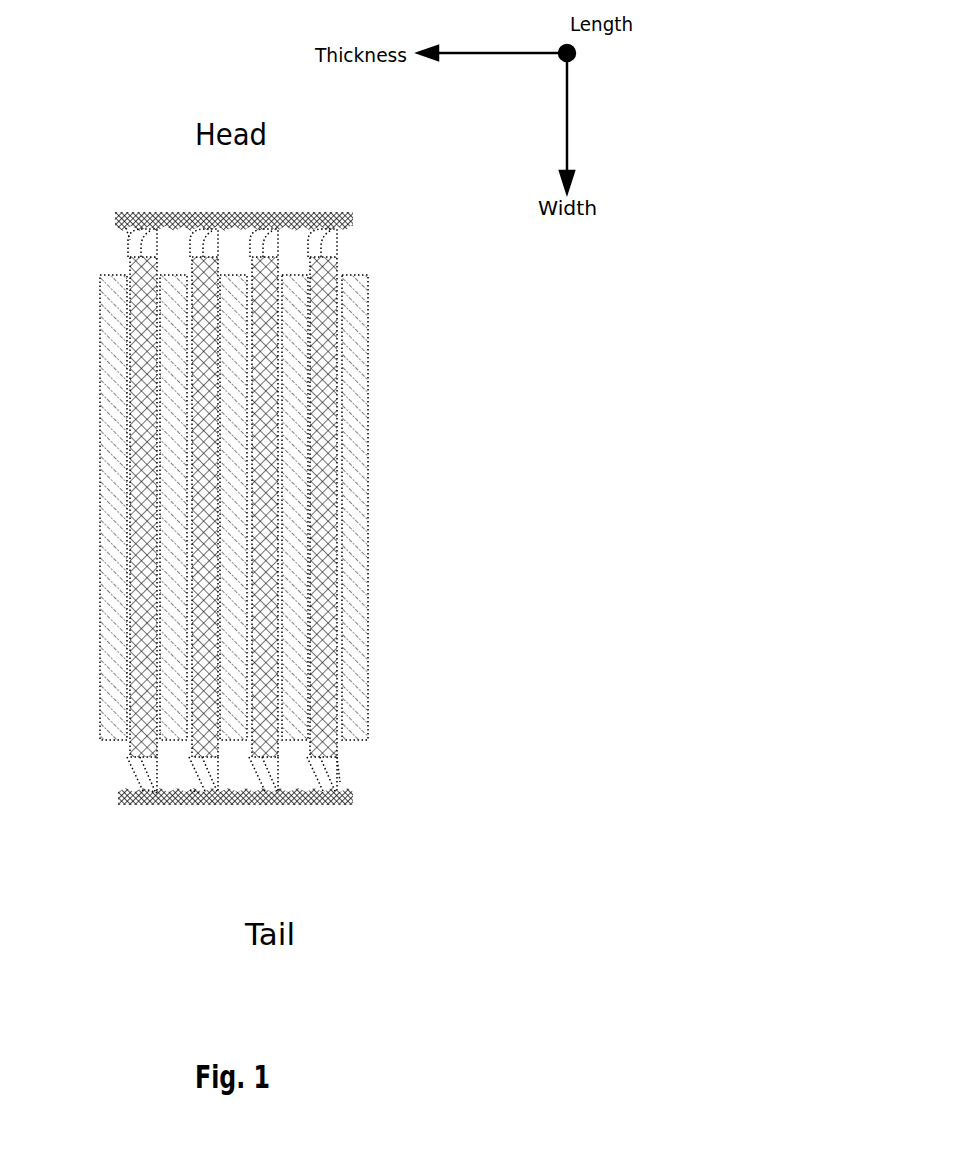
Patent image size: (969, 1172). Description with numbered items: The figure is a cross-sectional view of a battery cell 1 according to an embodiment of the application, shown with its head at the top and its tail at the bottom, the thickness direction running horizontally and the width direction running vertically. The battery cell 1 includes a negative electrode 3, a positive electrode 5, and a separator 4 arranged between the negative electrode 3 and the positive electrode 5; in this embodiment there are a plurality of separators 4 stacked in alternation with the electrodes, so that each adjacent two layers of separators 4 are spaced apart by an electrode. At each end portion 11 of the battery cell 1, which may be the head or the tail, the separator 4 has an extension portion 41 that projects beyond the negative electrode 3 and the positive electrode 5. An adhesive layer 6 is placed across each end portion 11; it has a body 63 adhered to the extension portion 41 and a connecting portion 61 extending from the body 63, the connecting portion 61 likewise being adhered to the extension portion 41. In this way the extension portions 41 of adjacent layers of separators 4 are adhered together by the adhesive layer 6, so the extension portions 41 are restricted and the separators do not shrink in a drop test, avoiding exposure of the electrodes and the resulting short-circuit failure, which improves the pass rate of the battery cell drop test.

The battery cell 1 is at (386, 281).
The end portion 11 is at (266, 194).
The negative electrode 3 is at (367, 740).
The separator 4 is at (343, 757).
The extension portion 41 is at (322, 805).
The positive electrode 5 is at (340, 782).
The adhesive layer 6 is at (115, 213).
The connecting portion 61 is at (126, 229).
The body 63 is at (193, 805).